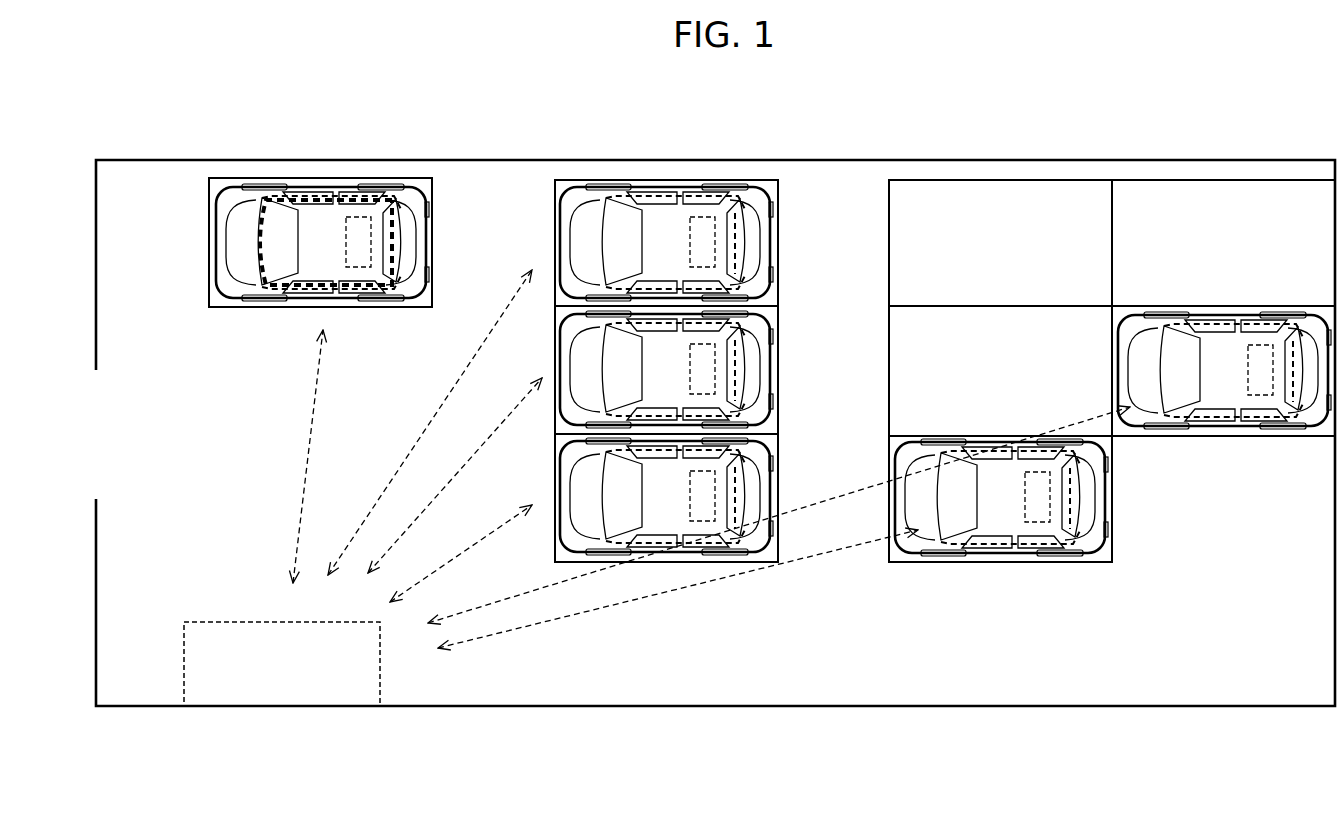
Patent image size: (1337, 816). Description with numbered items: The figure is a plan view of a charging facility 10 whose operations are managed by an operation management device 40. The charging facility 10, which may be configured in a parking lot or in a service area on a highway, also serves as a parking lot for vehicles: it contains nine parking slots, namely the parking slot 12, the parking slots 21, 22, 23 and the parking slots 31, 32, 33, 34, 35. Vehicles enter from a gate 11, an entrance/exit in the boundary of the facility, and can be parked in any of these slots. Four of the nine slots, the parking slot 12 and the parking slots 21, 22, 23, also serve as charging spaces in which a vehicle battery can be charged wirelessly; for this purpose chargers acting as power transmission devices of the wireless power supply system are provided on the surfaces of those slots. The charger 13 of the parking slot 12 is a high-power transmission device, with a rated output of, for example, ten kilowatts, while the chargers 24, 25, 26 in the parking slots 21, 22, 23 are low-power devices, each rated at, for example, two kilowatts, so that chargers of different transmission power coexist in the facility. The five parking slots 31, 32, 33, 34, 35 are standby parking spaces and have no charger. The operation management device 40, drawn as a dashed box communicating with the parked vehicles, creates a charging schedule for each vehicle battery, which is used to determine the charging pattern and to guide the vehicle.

The charging facility 10 is at (862, 707).
The gate 11 is at (106, 383).
The parking slot 12 is at (209, 196).
The charger 13 is at (322, 192).
The parking slot 21 is at (779, 523).
The parking slot 22 is at (779, 396).
The parking slot 23 is at (779, 268).
The charger 24 is at (738, 482).
The charger 25 is at (738, 369).
The charger 26 is at (738, 242).
The parking slot 31 is at (1093, 563).
The parking slot 32 is at (1113, 440).
The parking slot 33 is at (1082, 186).
The parking slot 34 is at (1316, 437).
The parking slot 35 is at (1303, 186).
The operation management device 40 is at (184, 670).